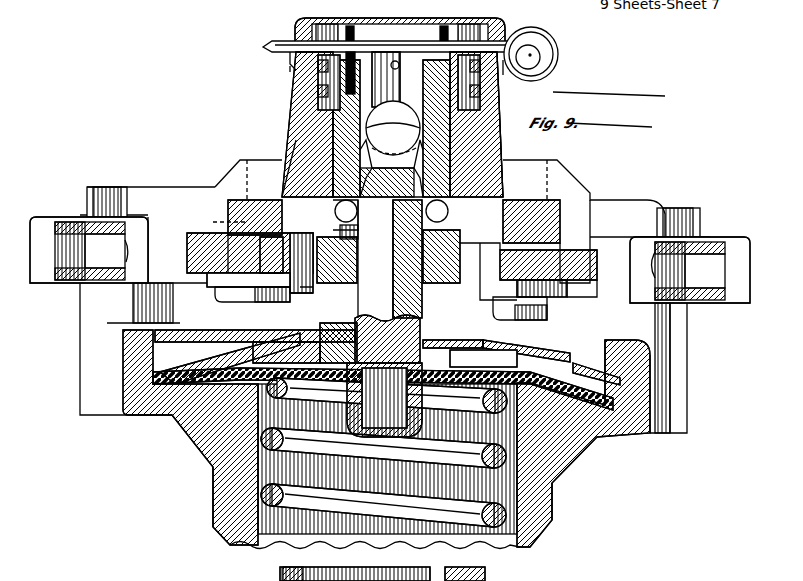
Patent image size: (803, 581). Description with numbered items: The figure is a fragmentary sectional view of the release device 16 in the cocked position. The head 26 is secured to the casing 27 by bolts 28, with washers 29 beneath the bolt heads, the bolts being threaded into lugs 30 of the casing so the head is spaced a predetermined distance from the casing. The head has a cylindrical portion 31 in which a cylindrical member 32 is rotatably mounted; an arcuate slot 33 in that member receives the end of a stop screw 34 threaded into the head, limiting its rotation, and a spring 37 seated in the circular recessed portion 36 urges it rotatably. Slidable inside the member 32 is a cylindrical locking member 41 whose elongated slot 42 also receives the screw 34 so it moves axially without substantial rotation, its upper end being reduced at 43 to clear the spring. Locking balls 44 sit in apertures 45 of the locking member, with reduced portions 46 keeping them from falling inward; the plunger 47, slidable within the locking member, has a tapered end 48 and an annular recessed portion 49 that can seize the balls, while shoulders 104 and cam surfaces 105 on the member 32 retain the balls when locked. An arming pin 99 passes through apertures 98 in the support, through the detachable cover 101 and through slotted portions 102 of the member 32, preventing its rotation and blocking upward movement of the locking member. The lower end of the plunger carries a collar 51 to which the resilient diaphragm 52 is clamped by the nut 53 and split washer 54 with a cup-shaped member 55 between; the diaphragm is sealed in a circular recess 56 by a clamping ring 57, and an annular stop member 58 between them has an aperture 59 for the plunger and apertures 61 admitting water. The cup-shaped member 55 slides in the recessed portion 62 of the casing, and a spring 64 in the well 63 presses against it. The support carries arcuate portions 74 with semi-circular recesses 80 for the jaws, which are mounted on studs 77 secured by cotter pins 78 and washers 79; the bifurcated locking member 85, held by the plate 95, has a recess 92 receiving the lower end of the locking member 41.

The circular recessed portion 36 is at (296, 32).
The apertures 98 is at (266, 46).
The arming pin 99 is at (558, 58).
The detachable cover 101 is at (289, 60).
The slotted portions 102 is at (289, 70).
The elongated slot 42 is at (297, 106).
The cylindrical locking member 41 is at (296, 125).
The tapered end 48 is at (292, 144).
The shoulders 104 is at (283, 168).
The apertures 45 is at (282, 185).
The stop screw 34 is at (400, 68).
The arcuate slot 33 is at (406, 110).
The spring 37 is at (493, 98).
The cylindrical portion 31 is at (495, 118).
The cylindrical member 32 is at (500, 142).
The head 26 is at (174, 188).
The bolts 28 is at (110, 186).
The washers 29 is at (82, 214).
The arcuate portions 74 is at (60, 224).
The semi-circular recess 80 is at (388, 257).
The lugs 30 is at (80, 300).
The annular recessed portion 49 is at (426, 211).
The locking balls 44 is at (362, 218).
The reduced portions 46 is at (356, 232).
The cam surfaces 105 is at (365, 248).
The plunger 47 is at (390, 259).
The bifurcated locking member 85 is at (498, 275).
The cotter pins 78 is at (235, 298).
The studs 77 is at (240, 314).
The washers 79 is at (312, 300).
The recess 92 is at (308, 300).
The plate 95 is at (460, 300).
The aperture 59 is at (397, 339).
The apertures 61 is at (300, 336).
The collar 51 is at (460, 355).
The resilient diaphragm 52 is at (518, 356).
The annular stop member 58 is at (575, 365).
The clamping ring 57 is at (612, 344).
The release device 16 is at (553, 500).
The casing 27 is at (212, 486).
The recessed portion 62 is at (553, 520).
The circular recess 56 is at (640, 412).
The well 63 is at (306, 542).
The split washer 54 is at (443, 404).
The cup-shaped member 55 is at (503, 445).
The spring 64 is at (484, 494).
The nut 53 is at (430, 412).
The reduced portion 43 is at (382, 563).